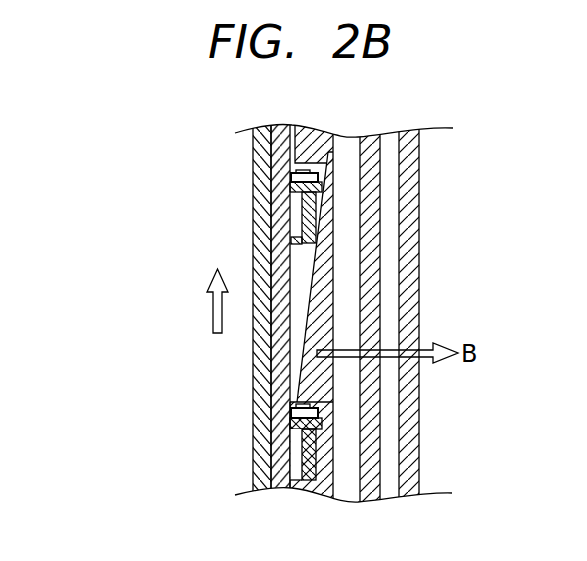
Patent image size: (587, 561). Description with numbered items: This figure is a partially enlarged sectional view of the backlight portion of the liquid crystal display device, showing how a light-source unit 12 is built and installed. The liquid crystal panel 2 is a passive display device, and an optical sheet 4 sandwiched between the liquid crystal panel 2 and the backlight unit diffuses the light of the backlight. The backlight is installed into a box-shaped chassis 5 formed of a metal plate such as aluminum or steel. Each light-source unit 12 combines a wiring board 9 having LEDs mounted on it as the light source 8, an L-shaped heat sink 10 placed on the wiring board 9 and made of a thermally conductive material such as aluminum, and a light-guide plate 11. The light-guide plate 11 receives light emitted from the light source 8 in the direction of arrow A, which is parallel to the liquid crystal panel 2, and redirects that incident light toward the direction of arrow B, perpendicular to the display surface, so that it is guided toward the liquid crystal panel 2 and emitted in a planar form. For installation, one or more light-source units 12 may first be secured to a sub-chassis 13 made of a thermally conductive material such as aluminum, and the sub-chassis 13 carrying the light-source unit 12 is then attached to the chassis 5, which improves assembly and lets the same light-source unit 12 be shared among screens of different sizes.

The liquid crystal panel 2 is at (412, 195).
The optical sheet 4 is at (373, 252).
The chassis 5 is at (265, 157).
The light source 8 is at (292, 407).
The wiring board 9 is at (295, 422).
The heat sink 10 is at (295, 450).
The light-guide plate 11 is at (320, 258).
The light-source unit 12 is at (188, 313).
The sub-chassis 13 is at (278, 207).